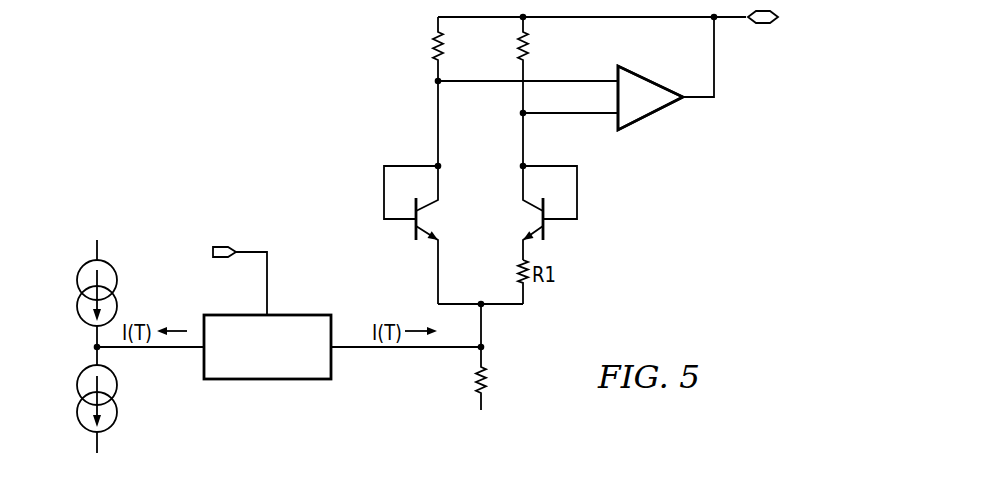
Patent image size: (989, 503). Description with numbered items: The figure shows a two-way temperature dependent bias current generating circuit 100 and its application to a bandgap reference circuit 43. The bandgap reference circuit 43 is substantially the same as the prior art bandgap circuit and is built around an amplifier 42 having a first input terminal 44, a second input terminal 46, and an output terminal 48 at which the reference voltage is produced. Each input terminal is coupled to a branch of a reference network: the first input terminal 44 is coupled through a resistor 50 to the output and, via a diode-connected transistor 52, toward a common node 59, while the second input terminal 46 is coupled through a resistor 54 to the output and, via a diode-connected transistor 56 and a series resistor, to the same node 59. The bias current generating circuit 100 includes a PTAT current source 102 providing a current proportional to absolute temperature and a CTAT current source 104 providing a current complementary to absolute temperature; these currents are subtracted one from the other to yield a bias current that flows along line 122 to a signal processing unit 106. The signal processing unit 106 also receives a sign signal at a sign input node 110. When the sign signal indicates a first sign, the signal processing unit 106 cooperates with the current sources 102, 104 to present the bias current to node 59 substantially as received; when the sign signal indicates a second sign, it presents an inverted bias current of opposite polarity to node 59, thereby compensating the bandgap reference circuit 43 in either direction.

The amplifier 42 is at (648, 77).
The bandgap reference circuit 43 is at (664, 140).
The first input terminal 44 is at (480, 83).
The second input terminal 46 is at (590, 115).
The output terminal 48 is at (715, 57).
The first resistor 50 is at (433, 42).
The diode-connected transistor 52 is at (414, 227).
The second resistor 54 is at (528, 46).
The diode-connected transistor 56 is at (545, 227).
The node 59 is at (476, 351).
The bias current generating circuit 100 is at (285, 194).
The PTAT current source 102 is at (77, 282).
The CTAT current source 104 is at (77, 413).
The signal processing unit 106 is at (300, 313).
The sign input node 110 is at (265, 313).
The current line 122 is at (172, 349).